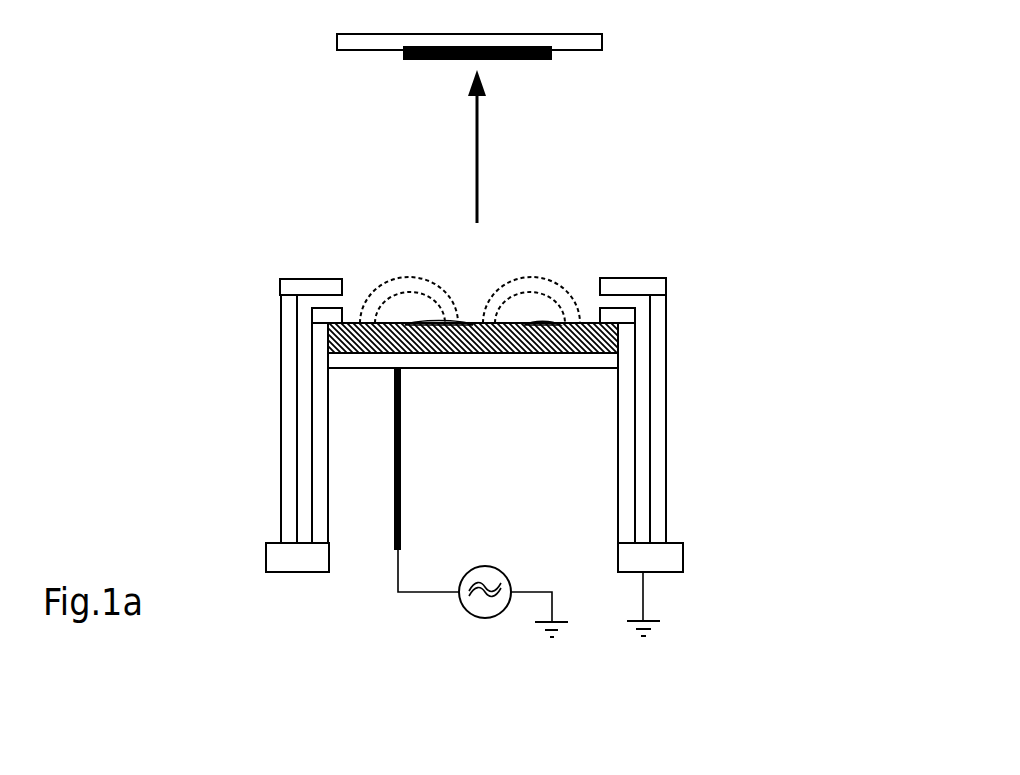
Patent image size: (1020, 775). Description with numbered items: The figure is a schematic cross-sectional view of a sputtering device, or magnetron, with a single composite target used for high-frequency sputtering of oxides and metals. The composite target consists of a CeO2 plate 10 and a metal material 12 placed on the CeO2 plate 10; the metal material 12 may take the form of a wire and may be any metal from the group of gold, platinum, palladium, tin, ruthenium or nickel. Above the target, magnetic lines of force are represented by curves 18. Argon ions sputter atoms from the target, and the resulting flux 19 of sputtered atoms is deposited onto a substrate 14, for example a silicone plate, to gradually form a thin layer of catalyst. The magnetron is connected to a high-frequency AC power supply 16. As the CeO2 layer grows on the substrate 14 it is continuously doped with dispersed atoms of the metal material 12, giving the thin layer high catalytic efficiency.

The CeO2 plate 10 is at (375, 328).
The metal material 12 is at (427, 325).
The substrate 14 is at (523, 58).
The high-frequency AC power supply 16 is at (479, 626).
The magnetic lines of force 18 is at (430, 266).
The flux of sputtered atoms 19 is at (489, 151).